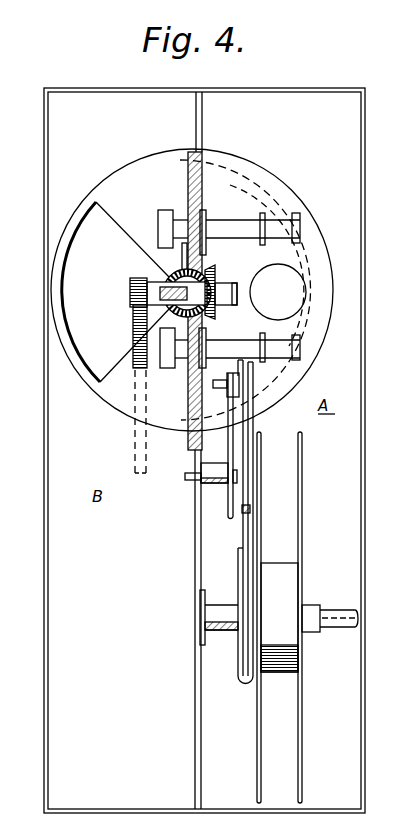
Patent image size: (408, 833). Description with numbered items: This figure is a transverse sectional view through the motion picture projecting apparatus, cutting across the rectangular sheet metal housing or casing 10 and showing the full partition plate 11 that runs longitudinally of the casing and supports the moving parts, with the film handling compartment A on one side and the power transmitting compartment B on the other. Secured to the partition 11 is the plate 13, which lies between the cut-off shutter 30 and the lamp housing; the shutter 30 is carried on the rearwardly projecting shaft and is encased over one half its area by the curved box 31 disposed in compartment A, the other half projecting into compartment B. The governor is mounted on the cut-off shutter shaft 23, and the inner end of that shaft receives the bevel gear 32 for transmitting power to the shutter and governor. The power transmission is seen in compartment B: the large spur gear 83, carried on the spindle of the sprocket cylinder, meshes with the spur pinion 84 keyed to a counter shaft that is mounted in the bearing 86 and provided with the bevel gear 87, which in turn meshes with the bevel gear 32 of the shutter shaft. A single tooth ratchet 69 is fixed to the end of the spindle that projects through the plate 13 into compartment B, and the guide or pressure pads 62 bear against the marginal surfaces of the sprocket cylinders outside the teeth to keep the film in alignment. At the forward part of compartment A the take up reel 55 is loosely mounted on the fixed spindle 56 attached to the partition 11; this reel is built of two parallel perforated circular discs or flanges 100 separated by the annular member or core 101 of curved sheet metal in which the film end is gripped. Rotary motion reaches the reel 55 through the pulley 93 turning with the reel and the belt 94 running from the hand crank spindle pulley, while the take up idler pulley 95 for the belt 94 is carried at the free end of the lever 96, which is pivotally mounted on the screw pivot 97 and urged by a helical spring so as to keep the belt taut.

The housing or casing 10 is at (300, 88).
The partition plate 11 is at (195, 537).
The plate 13 is at (189, 404).
The cut-off shutter shaft 23 is at (208, 307).
The cut-off shutter 30 is at (100, 385).
The curved box 31 is at (313, 364).
The bevel gear 32 is at (183, 263).
The take up reel 55 is at (303, 478).
The fixed spindle 56 is at (338, 608).
The guide or pressure pad 62 is at (292, 214).
The single tooth ratchet 69 is at (158, 220).
The large spur gear 83 is at (133, 335).
The spur pinion 84 is at (131, 283).
The bearing 86 is at (168, 280).
The bevel gear 87 is at (214, 276).
The pulley 93 is at (240, 569).
The belt 94 is at (240, 529).
The take up idler pulley 95 is at (255, 388).
The lever 96 is at (229, 451).
The screw pivot 97 is at (214, 483).
The circular discs or flanges 100 is at (298, 458).
The annular member or core 101 is at (278, 570).